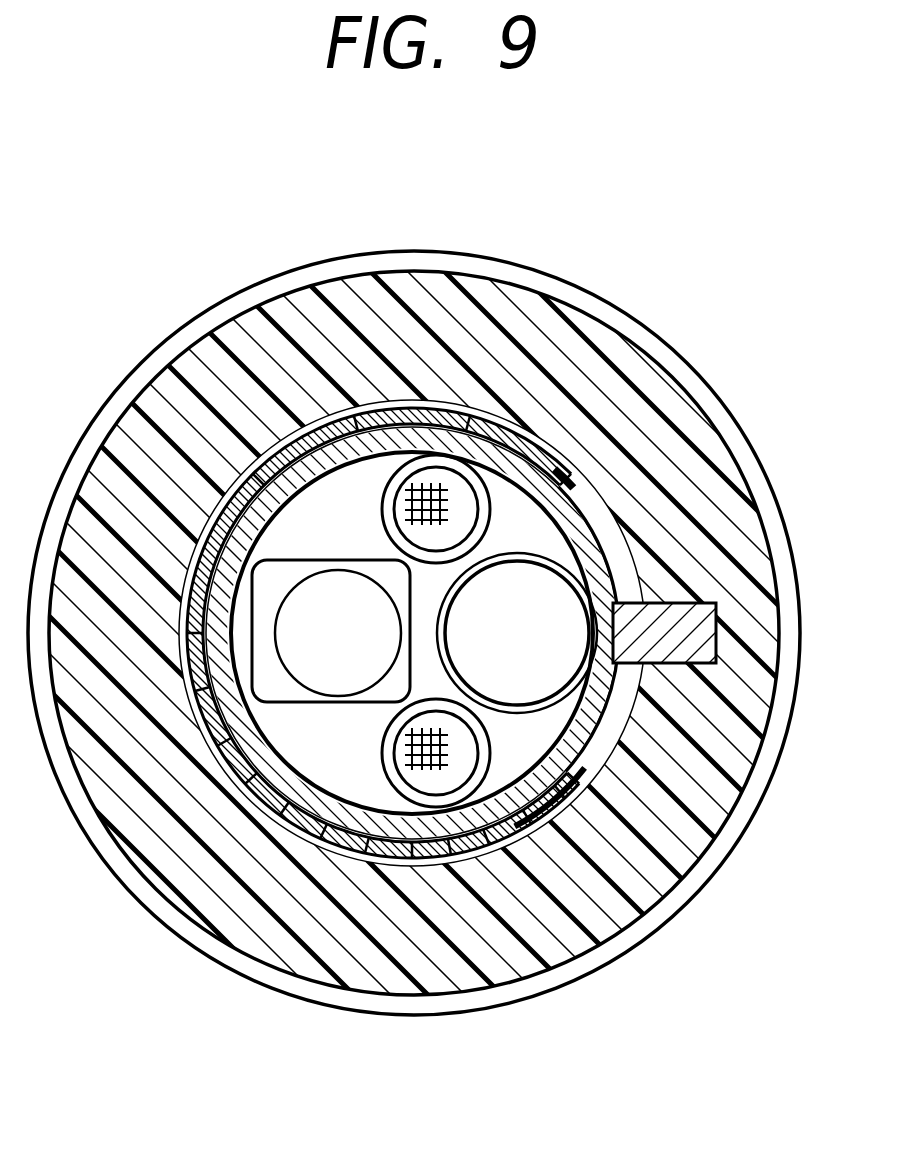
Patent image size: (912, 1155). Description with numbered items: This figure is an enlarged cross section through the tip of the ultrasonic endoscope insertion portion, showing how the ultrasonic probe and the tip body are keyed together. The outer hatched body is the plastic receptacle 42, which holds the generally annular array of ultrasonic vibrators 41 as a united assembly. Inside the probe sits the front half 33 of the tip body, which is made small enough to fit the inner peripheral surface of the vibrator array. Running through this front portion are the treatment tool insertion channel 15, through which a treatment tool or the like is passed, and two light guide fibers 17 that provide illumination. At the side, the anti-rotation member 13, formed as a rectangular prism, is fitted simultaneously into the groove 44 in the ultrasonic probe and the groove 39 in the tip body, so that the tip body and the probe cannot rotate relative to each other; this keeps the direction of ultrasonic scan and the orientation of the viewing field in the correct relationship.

The anti-rotation member 13 is at (668, 612).
The treatment tool insertion channel 15 is at (528, 565).
The light guide fiber 17 is at (435, 477).
The front half 33 is at (597, 707).
The groove 39 is at (717, 662).
The ultrasonic vibrators 41 is at (293, 572).
The plastic receptacle 42 is at (678, 407).
The groove 44 is at (660, 648).